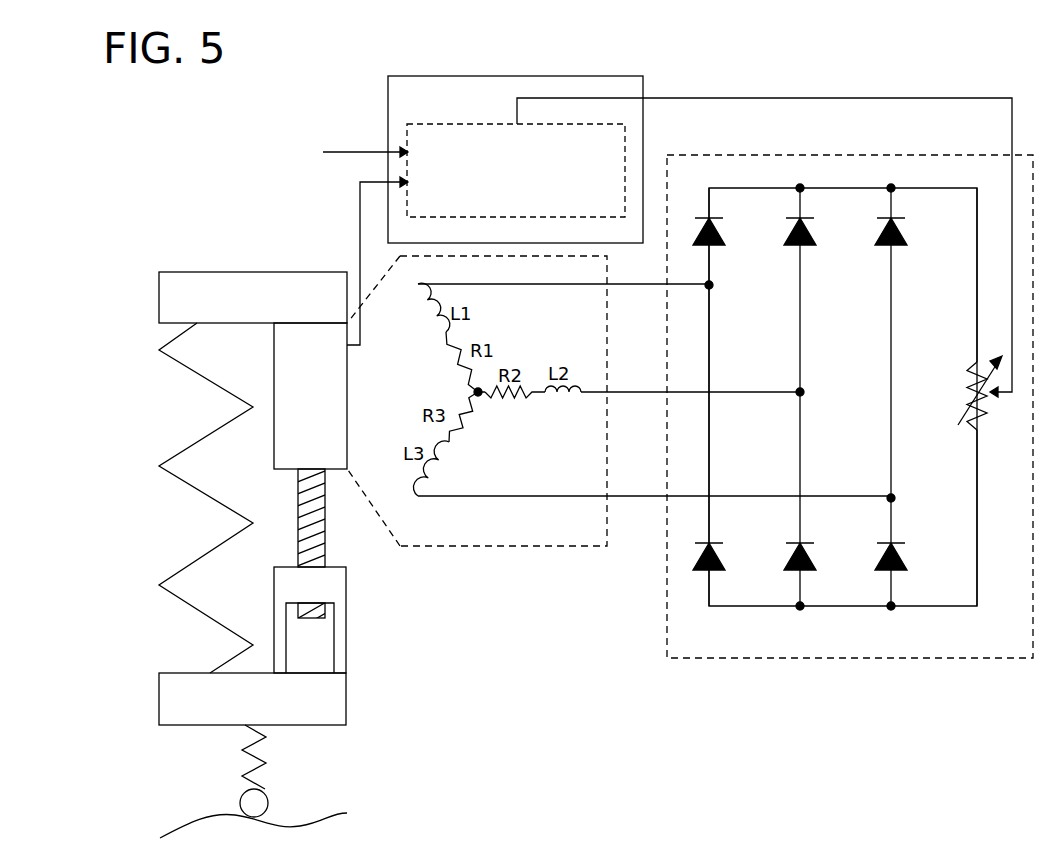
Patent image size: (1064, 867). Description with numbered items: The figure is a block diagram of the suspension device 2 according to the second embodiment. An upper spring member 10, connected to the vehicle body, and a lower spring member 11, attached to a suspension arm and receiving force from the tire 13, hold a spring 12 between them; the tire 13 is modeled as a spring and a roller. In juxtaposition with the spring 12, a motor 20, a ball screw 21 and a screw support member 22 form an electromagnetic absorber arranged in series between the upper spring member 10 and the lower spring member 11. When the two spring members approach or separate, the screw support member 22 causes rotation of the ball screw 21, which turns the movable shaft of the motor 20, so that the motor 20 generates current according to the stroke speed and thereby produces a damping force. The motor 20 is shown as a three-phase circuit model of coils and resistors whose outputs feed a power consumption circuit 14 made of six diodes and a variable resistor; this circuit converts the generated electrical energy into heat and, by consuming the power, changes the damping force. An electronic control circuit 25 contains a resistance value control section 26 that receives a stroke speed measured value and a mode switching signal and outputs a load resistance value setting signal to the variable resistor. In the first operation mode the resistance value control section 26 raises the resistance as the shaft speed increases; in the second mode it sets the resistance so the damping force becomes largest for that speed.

The suspension device 2 is at (786, 62).
The upper spring member 10 is at (247, 272).
The lower spring member 11 is at (290, 725).
The spring 12 is at (185, 450).
The tire 13 is at (243, 760).
The power consumption circuit 14 is at (875, 155).
The motor 20 is at (272, 425).
The ball screw 21 is at (326, 527).
The screw support member 22 is at (348, 595).
The electronic control circuit 25 is at (542, 76).
The resistance value control section 26 is at (445, 124).